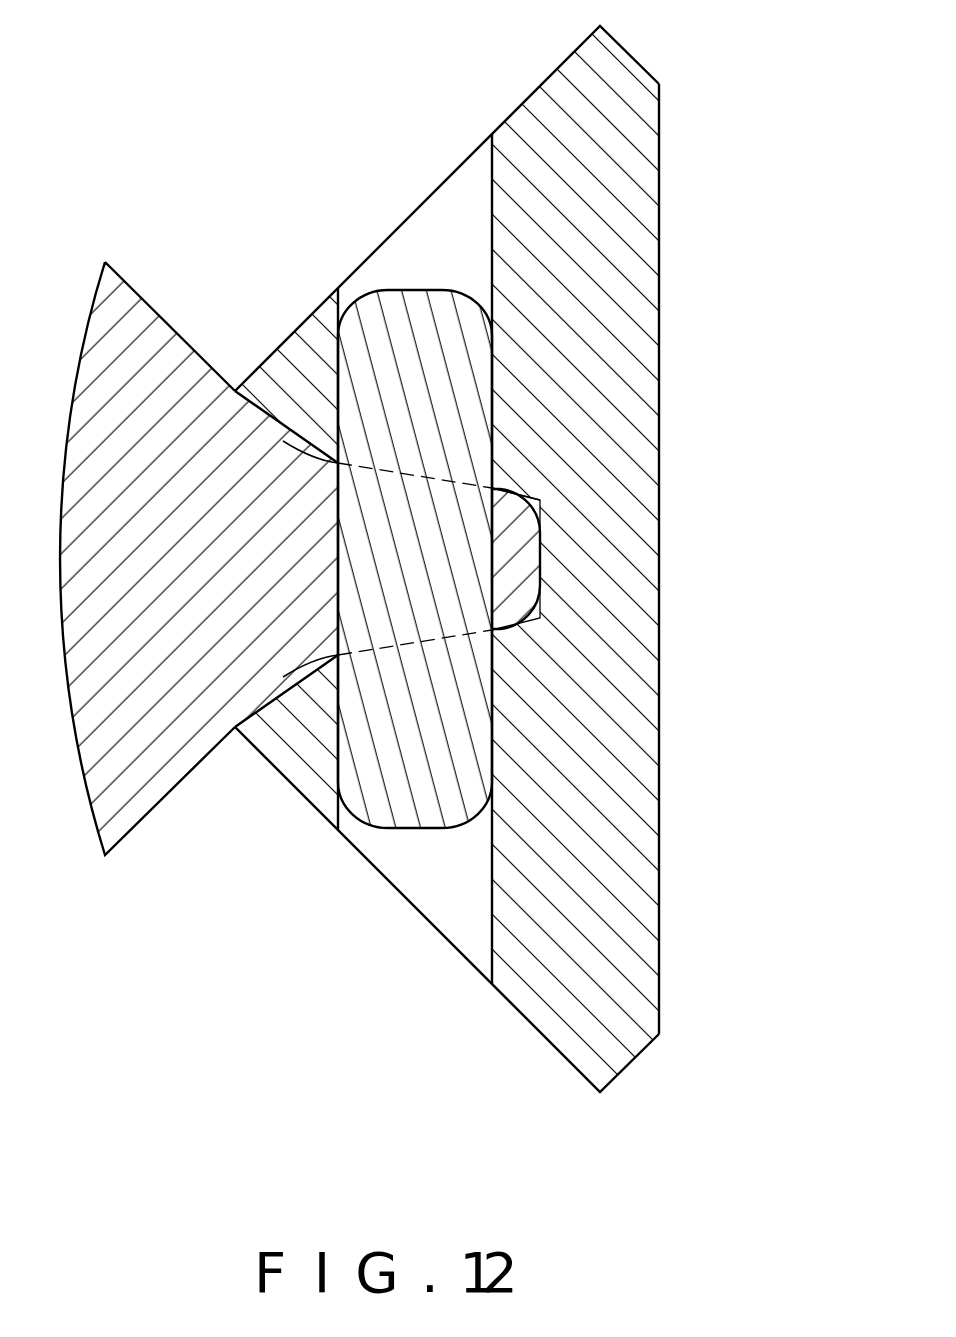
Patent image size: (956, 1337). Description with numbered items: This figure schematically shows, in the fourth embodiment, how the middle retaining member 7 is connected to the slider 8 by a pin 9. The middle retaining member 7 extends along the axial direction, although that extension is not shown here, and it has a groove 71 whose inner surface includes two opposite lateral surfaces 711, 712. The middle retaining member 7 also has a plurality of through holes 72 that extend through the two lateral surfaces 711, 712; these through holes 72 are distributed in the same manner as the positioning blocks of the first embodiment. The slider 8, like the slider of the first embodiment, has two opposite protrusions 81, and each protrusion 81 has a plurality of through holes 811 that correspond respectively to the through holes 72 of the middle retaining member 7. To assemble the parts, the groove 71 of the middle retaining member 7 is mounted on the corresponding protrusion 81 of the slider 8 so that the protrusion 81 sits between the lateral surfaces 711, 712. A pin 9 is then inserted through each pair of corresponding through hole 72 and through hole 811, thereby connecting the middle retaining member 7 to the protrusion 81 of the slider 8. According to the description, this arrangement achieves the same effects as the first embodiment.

The middle retaining member 7 is at (612, 218).
The groove 71 is at (547, 516).
The lateral surface 711 is at (520, 500).
The lateral surface 712 is at (660, 810).
The through hole 72 is at (422, 235).
The slider 8 is at (153, 432).
The protrusion 81 is at (518, 565).
The through hole 811 is at (333, 567).
The pin 9 is at (422, 760).